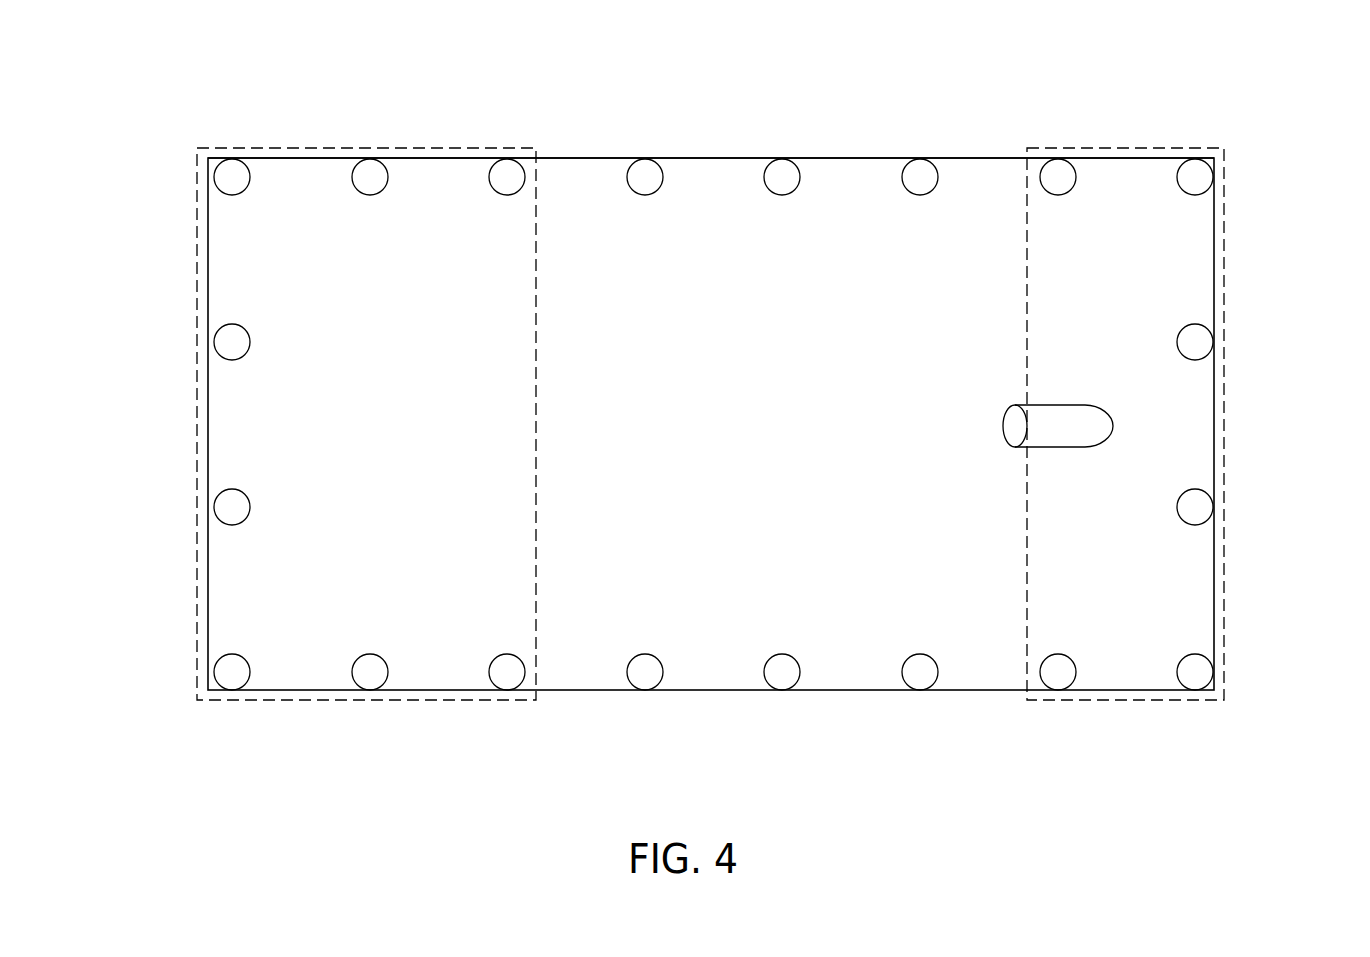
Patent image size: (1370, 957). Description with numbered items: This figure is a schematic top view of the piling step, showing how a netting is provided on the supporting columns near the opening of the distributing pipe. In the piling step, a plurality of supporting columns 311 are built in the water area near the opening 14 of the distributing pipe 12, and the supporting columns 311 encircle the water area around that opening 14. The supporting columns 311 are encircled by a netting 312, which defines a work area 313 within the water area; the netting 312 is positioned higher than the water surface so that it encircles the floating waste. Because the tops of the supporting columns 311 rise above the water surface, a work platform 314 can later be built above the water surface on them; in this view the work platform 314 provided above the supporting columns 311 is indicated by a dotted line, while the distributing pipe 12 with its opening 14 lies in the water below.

The distributing pipe 12 is at (1090, 415).
The opening 14 is at (1010, 420).
The supporting columns 311 is at (1065, 172).
The netting 312 is at (710, 158).
The work area 313 is at (838, 235).
The work platform 314 is at (197, 295).